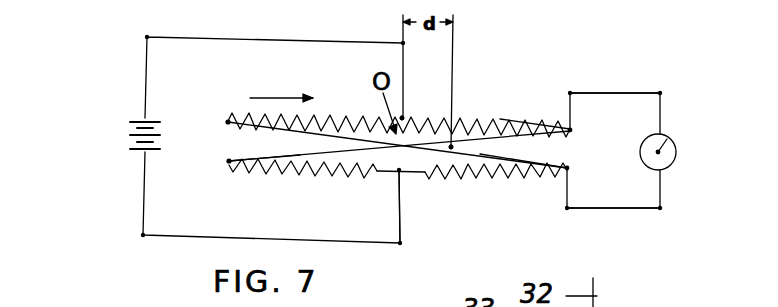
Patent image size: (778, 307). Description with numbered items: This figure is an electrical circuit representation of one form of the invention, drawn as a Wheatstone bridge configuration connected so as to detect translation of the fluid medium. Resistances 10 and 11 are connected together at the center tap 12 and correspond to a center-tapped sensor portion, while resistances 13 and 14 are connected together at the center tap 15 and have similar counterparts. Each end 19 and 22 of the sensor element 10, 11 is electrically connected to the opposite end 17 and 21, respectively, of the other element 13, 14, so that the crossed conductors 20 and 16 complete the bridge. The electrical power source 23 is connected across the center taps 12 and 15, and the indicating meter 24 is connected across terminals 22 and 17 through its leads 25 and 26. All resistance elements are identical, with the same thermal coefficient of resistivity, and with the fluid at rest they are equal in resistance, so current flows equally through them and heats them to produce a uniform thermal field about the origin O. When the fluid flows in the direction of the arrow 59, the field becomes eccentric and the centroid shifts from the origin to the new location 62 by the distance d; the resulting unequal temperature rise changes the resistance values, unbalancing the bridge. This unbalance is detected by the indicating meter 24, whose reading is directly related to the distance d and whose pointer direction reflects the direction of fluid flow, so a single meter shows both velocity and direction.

The resistance 10 is at (340, 110).
The resistance 11 is at (508, 118).
The center tap 12 is at (402, 118).
The resistance 13 is at (317, 172).
The resistance 14 is at (505, 178).
The center tap 15 is at (401, 172).
The right end of lower wiper conductor 16 is at (524, 162).
The end of resistance element 17 is at (567, 168).
The end of sensor element 19 is at (228, 122).
The upper wiper conductor 20 is at (287, 154).
The end of resistance element 21 is at (227, 165).
The end of sensor element 22 is at (571, 132).
The electrical power source 23 is at (133, 135).
The indicating meter 24 is at (678, 150).
The upper meter lead 25 is at (618, 93).
The lower meter lead 26 is at (635, 210).
The arrow 59 is at (287, 98).
The new centroid location 62 is at (452, 146).